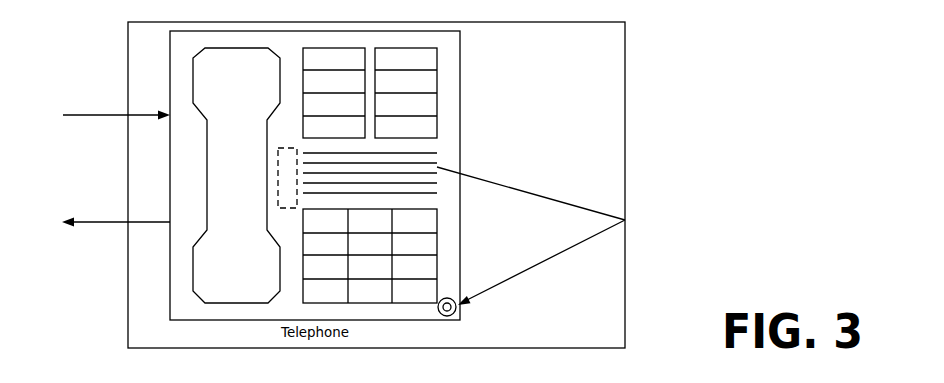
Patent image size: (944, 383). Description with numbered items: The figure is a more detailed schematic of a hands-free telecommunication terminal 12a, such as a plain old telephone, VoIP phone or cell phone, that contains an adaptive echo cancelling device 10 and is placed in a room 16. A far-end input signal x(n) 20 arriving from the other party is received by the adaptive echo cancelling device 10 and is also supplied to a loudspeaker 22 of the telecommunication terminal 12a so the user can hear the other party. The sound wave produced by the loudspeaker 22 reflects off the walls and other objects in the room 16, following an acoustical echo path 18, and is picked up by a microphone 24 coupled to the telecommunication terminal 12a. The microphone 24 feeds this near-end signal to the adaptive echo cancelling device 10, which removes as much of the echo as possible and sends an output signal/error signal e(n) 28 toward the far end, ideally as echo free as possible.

The adaptive echo cancelling device 10 is at (288, 141).
The telecommunication terminal 12a is at (183, 62).
The room 16 is at (537, 22).
The acoustical echo path 18 is at (588, 207).
The far-end input signal x(n) 20 is at (125, 113).
The loudspeaker 22 is at (372, 169).
The microphone 24 is at (462, 314).
The output signal/error signal e(n) 28 is at (124, 221).